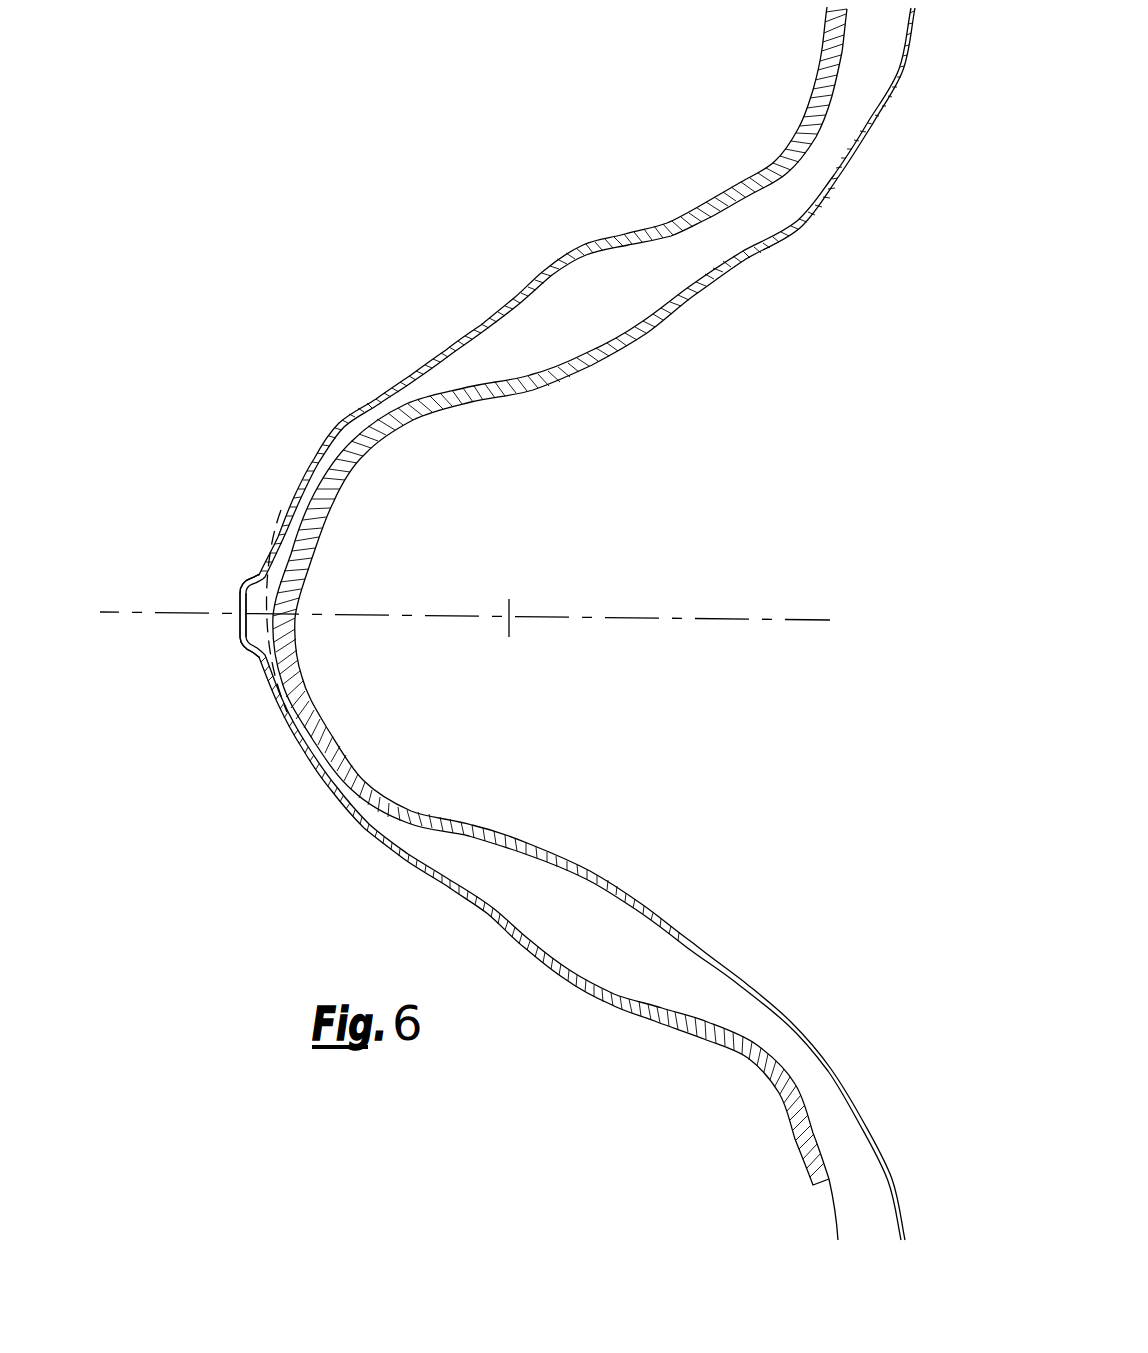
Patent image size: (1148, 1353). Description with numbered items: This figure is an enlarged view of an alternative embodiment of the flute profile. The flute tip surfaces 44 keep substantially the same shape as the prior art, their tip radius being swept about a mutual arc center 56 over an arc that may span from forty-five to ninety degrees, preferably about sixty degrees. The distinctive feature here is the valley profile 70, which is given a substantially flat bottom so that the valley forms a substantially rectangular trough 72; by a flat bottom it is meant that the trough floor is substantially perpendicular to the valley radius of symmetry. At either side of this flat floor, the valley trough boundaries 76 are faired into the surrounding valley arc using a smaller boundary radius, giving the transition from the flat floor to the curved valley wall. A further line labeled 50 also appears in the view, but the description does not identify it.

The flute tip surfaces 44 is at (322, 740).
The valley profile 70 is at (214, 592).
The substantially rectangular trough 72 is at (245, 626).
The valley trough boundaries 76 is at (256, 579).
The centerline 50 is at (631, 621).
The mutual arc center 56 is at (511, 619).